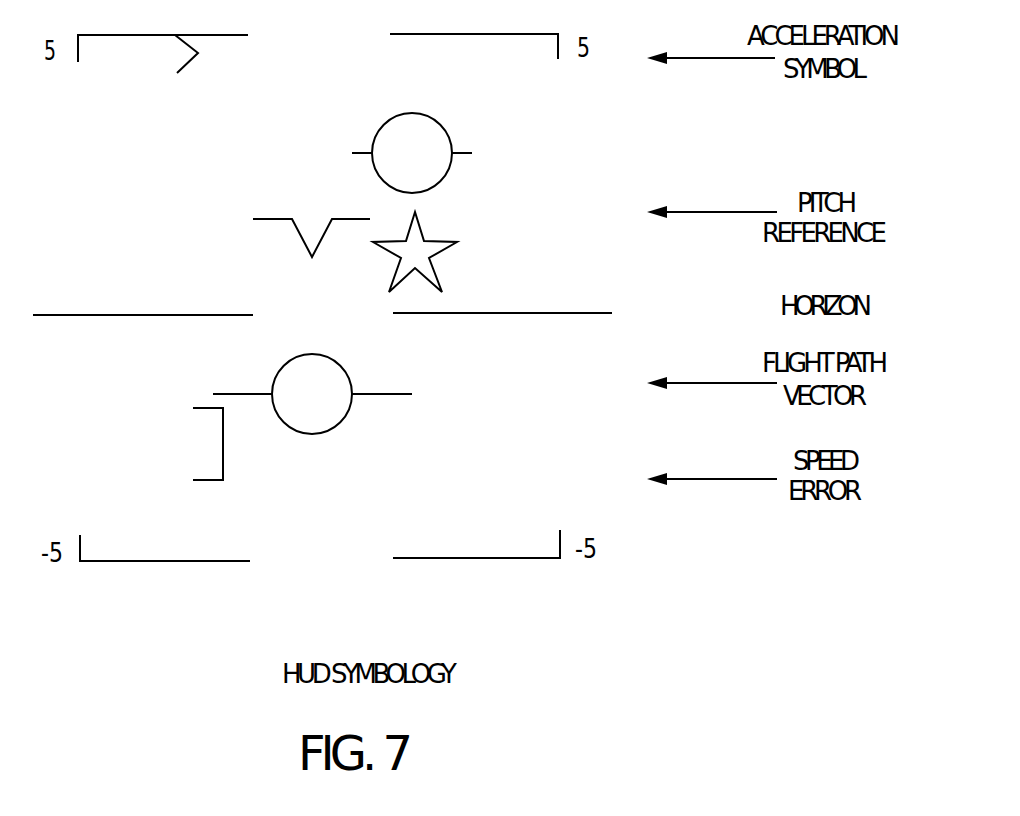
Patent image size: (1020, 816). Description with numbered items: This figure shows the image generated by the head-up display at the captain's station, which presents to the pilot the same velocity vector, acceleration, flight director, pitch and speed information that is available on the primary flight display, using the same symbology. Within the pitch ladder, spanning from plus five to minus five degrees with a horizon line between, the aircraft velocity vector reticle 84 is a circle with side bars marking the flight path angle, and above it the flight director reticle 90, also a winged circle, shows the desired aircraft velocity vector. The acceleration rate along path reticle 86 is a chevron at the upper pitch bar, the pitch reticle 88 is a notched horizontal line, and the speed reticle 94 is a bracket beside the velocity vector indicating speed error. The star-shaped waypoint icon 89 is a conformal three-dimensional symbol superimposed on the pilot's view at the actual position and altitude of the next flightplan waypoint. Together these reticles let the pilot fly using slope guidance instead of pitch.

The aircraft velocity vector reticle 84 is at (347, 415).
The acceleration rate along path reticle 86 is at (178, 56).
The pitch reticle 88 is at (292, 218).
The star-shaped waypoint icon 89 is at (443, 253).
The flight director reticle 90 is at (447, 130).
The speed reticle 94 is at (223, 429).